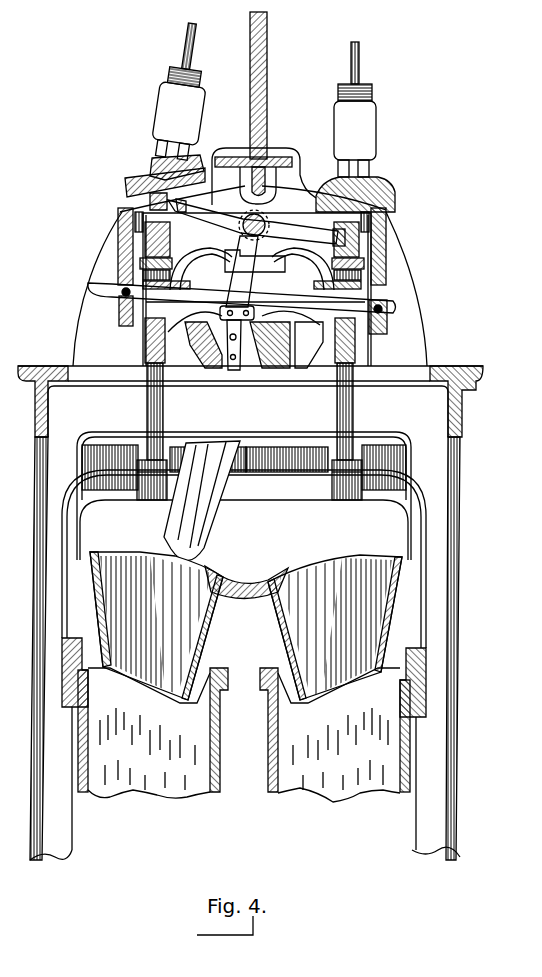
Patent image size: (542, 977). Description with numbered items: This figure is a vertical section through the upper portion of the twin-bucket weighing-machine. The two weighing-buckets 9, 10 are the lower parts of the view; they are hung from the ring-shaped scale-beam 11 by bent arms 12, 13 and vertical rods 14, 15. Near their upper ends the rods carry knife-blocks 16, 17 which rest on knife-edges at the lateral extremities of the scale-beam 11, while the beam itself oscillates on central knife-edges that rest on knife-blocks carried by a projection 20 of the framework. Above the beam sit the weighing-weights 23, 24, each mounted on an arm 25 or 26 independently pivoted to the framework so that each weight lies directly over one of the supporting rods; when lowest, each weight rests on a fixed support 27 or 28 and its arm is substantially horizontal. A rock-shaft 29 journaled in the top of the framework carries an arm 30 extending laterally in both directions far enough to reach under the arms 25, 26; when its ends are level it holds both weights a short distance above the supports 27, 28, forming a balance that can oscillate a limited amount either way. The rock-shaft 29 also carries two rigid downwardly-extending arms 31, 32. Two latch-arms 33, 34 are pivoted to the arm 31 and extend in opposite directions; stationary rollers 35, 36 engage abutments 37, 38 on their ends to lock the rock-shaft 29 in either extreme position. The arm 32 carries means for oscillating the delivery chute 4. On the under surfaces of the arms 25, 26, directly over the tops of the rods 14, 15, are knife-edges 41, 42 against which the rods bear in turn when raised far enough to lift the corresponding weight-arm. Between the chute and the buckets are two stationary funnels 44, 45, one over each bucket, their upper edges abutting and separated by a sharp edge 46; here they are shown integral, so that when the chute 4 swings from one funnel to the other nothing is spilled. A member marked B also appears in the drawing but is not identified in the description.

The oscillating chute 4 is at (205, 342).
The weighing-bucket 9 is at (153, 733).
The weighing-bucket 10 is at (335, 735).
The scale-beam 11 is at (196, 256).
The bent arm 12 is at (78, 529).
The bent arm 13 is at (410, 531).
The vertical rod 14 is at (163, 412).
The vertical rod 15 is at (338, 410).
The knife-block 16 is at (172, 260).
The knife-block 17 is at (387, 276).
The projection 20 is at (272, 272).
The weighing-weight 23 is at (163, 108).
The weighing-weight 24 is at (367, 120).
The arm 25 is at (222, 188).
The arm 26 is at (303, 198).
The fixed support 27 is at (118, 220).
The fixed support 28 is at (387, 223).
The rock-shaft 29 is at (262, 212).
The arm 30 is at (290, 257).
The downwardly-extending arm 31 is at (246, 300).
The downwardly-extending arm 32 is at (236, 338).
The latch-arm 33 is at (186, 313).
The latch-arm 34 is at (315, 314).
The stationary roller 35 is at (124, 302).
The stationary roller 36 is at (398, 318).
The abutment 37 is at (92, 293).
The abutment 38 is at (378, 334).
The knife-edge 41 is at (126, 190).
The knife-edge 42 is at (388, 203).
The stationary funnel 44 is at (156, 626).
The stationary funnel 45 is at (335, 627).
The sharp edge 46 is at (244, 576).
The base plate B is at (483, 388).